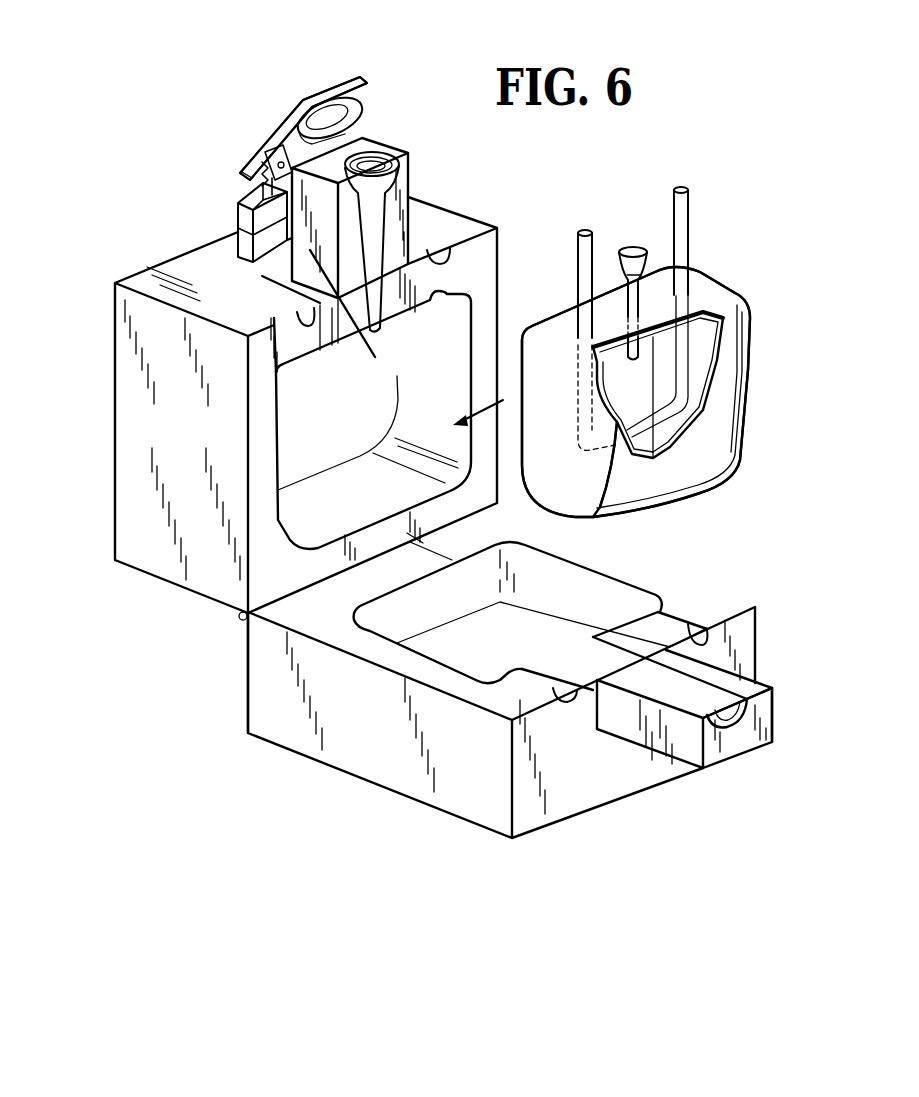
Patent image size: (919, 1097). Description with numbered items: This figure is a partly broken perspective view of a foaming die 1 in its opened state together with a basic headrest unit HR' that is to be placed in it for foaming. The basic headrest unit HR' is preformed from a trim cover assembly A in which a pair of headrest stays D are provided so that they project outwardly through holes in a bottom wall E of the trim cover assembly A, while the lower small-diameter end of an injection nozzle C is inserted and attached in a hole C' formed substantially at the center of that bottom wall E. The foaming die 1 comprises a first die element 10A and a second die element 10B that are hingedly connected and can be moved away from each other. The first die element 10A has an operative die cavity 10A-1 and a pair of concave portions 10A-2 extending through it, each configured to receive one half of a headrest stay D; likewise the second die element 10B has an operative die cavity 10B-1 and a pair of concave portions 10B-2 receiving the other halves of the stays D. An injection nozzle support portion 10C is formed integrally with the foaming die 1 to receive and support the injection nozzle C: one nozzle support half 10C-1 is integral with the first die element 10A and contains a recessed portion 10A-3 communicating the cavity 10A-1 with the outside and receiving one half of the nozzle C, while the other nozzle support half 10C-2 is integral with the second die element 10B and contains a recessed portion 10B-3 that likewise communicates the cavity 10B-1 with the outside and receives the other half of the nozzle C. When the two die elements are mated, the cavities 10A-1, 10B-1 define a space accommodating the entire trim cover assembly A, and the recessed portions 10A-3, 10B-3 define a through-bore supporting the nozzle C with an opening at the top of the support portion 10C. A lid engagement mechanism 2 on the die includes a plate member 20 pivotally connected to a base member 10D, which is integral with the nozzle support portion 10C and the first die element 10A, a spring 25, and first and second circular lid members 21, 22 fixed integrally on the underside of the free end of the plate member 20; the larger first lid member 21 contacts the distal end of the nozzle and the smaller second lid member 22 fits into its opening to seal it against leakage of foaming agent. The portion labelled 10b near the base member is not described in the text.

The foaming die 1 is at (198, 740).
The lid engagement mechanism 2 is at (388, 85).
The plate member 20 is at (292, 138).
The first circular lid member 21 is at (353, 112).
The second circular lid member 22 is at (347, 127).
The spring 25 is at (262, 180).
The hinge seat 10b is at (248, 212).
The base member 10D is at (237, 232).
The first die element 10A is at (157, 555).
The operative die cavity 10A-1 is at (313, 388).
The concave portions 10A-2 is at (238, 278).
The recessed portion 10A-3 is at (375, 215).
The injection nozzle support portion 10C is at (395, 175).
The nozzle support half 10C-1 is at (369, 323).
The nozzle support half 10C-2 is at (767, 720).
The second die element 10B is at (712, 587).
The operative die cavity 10B-1 is at (590, 585).
The concave portions 10B-2 is at (700, 624).
The recessed portion 10B-3 is at (695, 690).
The basic headrest unit HR' is at (666, 360).
The trim cover assembly A is at (727, 413).
The bottom wall E is at (560, 323).
The headrest stays D is at (590, 243).
The injection nozzle C is at (639, 271).
The hole C' is at (697, 387).